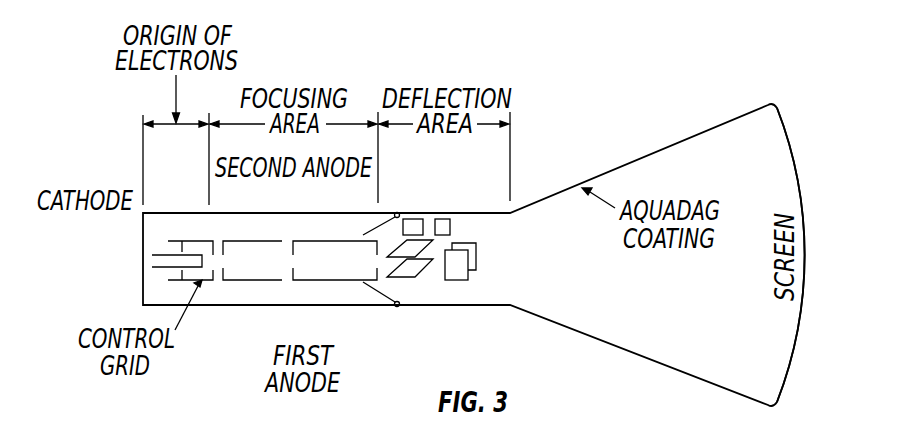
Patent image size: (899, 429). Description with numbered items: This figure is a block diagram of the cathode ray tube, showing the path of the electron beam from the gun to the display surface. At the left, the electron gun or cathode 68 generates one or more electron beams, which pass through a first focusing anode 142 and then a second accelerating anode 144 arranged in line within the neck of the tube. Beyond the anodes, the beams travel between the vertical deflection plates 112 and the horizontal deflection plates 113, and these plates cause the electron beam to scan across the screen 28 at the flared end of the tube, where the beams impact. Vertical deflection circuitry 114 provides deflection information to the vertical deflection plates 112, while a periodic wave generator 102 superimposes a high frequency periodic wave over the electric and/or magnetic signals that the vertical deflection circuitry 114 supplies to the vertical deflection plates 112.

The cathode 68 is at (162, 255).
The first focusing anode 142 is at (250, 280).
The second accelerating anode 144 is at (322, 241).
The vertical deflection circuitry 114 is at (414, 218).
The periodic wave generator 102 is at (444, 218).
The vertical deflection plates 112 is at (410, 252).
The horizontal deflection plates 113 is at (462, 262).
The screen 28 is at (787, 207).